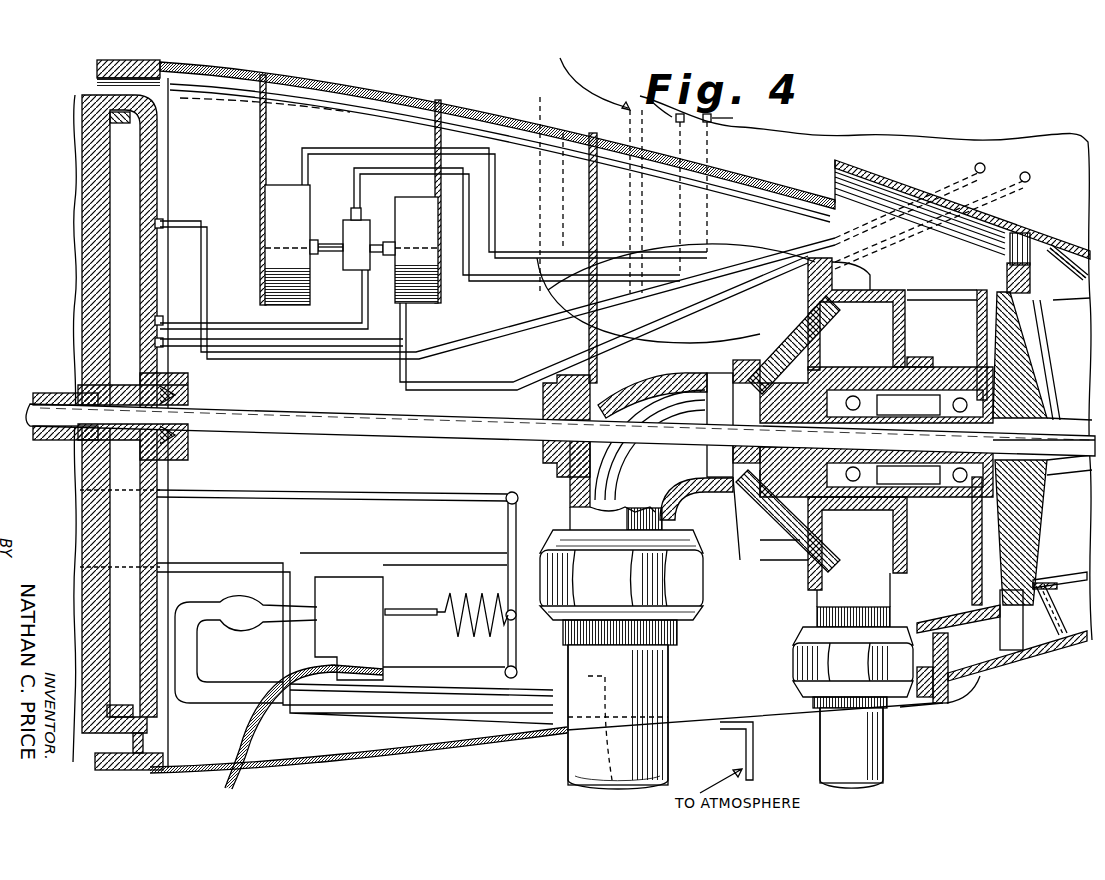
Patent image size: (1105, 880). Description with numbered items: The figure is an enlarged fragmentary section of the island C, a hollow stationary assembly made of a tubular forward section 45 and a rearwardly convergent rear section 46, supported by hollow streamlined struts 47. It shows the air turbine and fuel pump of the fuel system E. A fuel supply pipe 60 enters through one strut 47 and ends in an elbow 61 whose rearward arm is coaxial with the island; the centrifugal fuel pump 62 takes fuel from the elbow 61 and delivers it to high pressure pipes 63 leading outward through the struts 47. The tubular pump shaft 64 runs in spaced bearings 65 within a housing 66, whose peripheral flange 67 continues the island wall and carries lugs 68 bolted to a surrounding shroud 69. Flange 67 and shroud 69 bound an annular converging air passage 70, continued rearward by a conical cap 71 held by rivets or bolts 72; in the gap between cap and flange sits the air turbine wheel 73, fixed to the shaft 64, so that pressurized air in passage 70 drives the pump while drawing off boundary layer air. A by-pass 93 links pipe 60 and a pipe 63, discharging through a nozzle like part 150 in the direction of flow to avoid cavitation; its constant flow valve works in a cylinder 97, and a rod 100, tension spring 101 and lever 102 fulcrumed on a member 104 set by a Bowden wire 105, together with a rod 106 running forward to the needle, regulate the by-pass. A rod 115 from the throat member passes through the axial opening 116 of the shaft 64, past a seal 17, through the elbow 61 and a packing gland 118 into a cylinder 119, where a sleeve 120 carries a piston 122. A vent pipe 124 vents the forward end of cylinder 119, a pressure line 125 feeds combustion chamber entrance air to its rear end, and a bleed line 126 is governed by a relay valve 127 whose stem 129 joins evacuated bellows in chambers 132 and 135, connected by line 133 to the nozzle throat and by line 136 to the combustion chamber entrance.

The seal 17 is at (768, 442).
The tubular forward section 45 is at (117, 62).
The rear section 46 is at (378, 90).
The struts 47 is at (630, 108).
The fuel supply pipe 60 is at (570, 745).
The elbow 61 is at (570, 500).
The centrifugal fuel pump 62 is at (775, 520).
The pipes 63 is at (882, 752).
The pump shaft 64 is at (910, 475).
The bearings 65 is at (950, 390).
The housing 66 is at (905, 302).
The peripheral flange 67 is at (908, 296).
The lugs 68 is at (940, 705).
The shroud 69 is at (893, 172).
The air passage 70 is at (992, 247).
The conical cap 71 is at (1070, 578).
The rivets or bolts 72 is at (1060, 636).
The air turbine wheel 73 is at (1007, 630).
The by-pass 93 is at (208, 720).
The cylinder 97 is at (332, 577).
The rod 100 is at (405, 609).
The tension spring 101 is at (472, 630).
The lever 102 is at (514, 672).
The member 104 is at (415, 667).
The Bowden wire 105 is at (248, 742).
The rod 106 is at (352, 492).
The rod 115 is at (273, 412).
The axial opening 116 is at (1048, 392).
The packing gland 118 is at (543, 452).
The cylinder 119 is at (82, 100).
The sleeve 120 is at (47, 430).
The piston 122 is at (97, 330).
The vent pipe 124 is at (230, 566).
The pressure line 125 is at (343, 360).
The pressure bleed line 126 is at (366, 330).
The relay valve 127 is at (355, 265).
The stem 129 is at (330, 244).
The chamber 132 is at (285, 185).
The line 133 is at (345, 153).
The chamber 135 is at (405, 213).
The line 136 is at (405, 325).
The nozzle like part 150 is at (621, 634).
The island C is at (486, 98).
The fuel system E is at (664, 381).